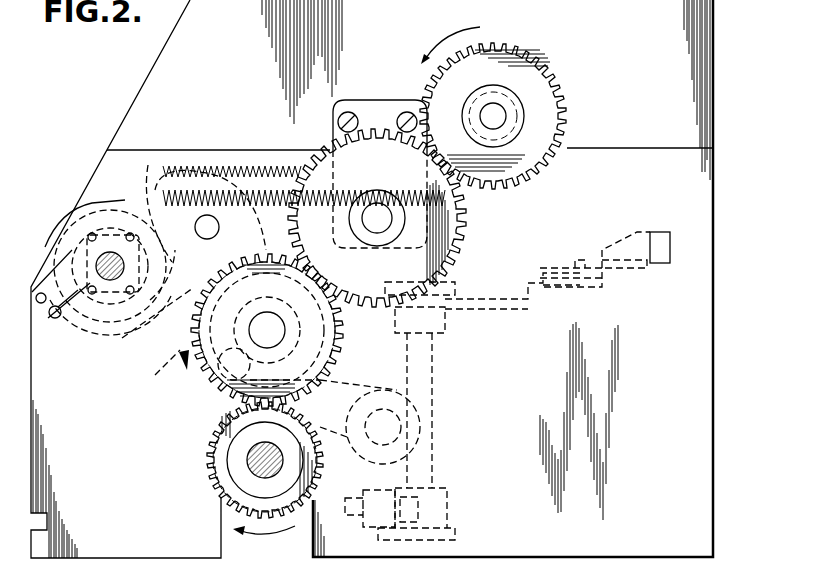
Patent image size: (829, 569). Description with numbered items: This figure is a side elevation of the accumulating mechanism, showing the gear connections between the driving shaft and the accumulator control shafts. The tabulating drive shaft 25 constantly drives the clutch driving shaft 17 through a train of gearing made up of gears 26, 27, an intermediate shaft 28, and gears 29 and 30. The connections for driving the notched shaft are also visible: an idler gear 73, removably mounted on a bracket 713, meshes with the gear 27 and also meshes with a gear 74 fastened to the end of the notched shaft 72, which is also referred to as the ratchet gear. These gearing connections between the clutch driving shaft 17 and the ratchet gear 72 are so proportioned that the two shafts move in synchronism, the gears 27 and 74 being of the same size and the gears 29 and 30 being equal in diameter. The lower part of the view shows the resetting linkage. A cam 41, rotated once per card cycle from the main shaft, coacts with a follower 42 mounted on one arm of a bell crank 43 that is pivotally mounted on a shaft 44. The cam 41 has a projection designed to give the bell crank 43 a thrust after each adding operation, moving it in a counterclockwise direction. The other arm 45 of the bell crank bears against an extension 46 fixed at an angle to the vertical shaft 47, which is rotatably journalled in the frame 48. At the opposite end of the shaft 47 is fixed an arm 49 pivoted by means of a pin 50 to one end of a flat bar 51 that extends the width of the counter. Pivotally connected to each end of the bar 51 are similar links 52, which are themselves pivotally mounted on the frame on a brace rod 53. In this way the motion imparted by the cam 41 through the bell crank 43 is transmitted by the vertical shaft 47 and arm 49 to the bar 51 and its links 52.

The bracket 713 is at (334, 112).
The gear 74 is at (550, 103).
The notched shaft 72 is at (500, 121).
The idler gear 73 is at (440, 240).
The shaft 17 is at (207, 227).
The gear 27 is at (253, 262).
The gear 30 is at (137, 330).
The gear 29 is at (157, 341).
The follower 42 is at (220, 368).
The cam 41 is at (292, 320).
The shaft 28 is at (278, 340).
The bell crank 43 is at (342, 380).
The shaft 44 is at (397, 415).
The vertical shaft 47 is at (432, 448).
The arm 45 is at (358, 485).
The frame 48 is at (453, 533).
The extension 46 is at (427, 507).
The arm 49 is at (490, 308).
The pin 50 is at (577, 262).
The flat bar 51 is at (602, 277).
The link 52 is at (630, 270).
The brace rod 53 is at (627, 240).
The gear 26 is at (222, 424).
The tabulating drive shaft 25 is at (250, 468).